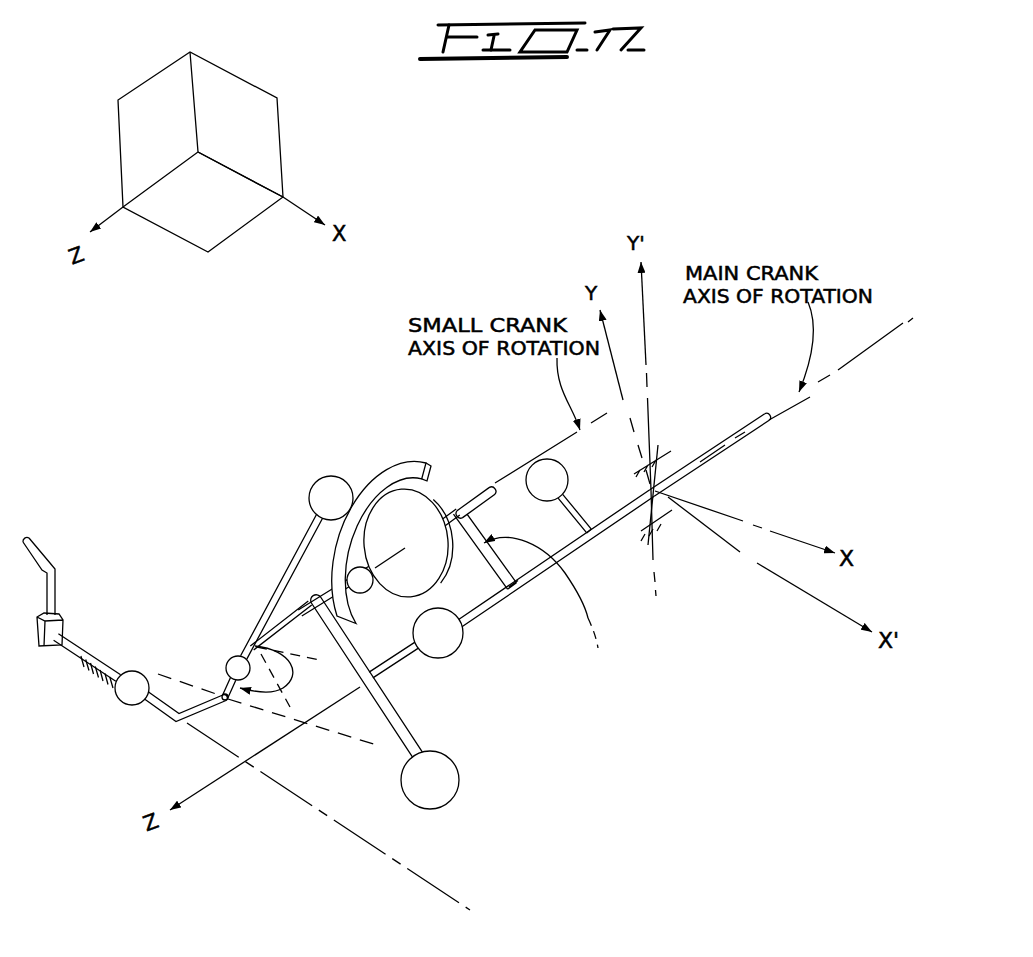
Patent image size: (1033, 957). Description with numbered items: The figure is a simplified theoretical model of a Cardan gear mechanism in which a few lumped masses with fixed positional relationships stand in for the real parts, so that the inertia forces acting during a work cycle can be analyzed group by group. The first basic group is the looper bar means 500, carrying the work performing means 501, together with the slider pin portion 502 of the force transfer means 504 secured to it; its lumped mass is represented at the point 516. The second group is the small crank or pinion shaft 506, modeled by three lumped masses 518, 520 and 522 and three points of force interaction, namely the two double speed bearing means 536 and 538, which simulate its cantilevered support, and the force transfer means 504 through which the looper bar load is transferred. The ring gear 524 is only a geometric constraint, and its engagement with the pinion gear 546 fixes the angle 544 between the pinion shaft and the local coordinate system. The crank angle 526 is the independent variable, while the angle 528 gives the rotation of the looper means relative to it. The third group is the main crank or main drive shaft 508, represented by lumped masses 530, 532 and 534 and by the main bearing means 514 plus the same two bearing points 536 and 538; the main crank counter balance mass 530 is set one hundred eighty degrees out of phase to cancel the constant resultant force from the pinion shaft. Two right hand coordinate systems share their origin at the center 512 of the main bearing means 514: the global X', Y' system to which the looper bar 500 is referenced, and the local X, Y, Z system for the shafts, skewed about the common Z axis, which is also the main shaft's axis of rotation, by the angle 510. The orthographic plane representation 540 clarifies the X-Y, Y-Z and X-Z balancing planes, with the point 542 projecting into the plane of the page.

The looper bar means 500 is at (77, 647).
The work performing means 501 is at (24, 552).
The slider pin portion 502 is at (208, 710).
The force transfer means 504 is at (226, 702).
The pinion shaft 506 is at (280, 631).
The main drive shaft 508 is at (584, 540).
The angle 510 is at (778, 537).
The center 512 is at (662, 492).
The main bearing means 514 is at (668, 450).
The point of lumped mass 516 is at (131, 671).
The lumped mass 518 is at (240, 657).
The pinion shaft counterweight lumped mass 520 is at (338, 477).
The lumped mass 522 is at (370, 589).
The ring gear 524 is at (395, 478).
The crank angle 526 is at (566, 580).
The angle 528 is at (209, 681).
The main crank counter balance mass 530 is at (447, 785).
The lumped mass 532 is at (459, 644).
The lumped mass 534 is at (564, 477).
The double speed bearing means 536 is at (313, 591).
The double speed bearing means 538 is at (462, 503).
The orthographic plane representation 540 is at (210, 62).
The point 542 is at (200, 154).
The angle 544 is at (292, 664).
The pinion gear 546 is at (417, 517).